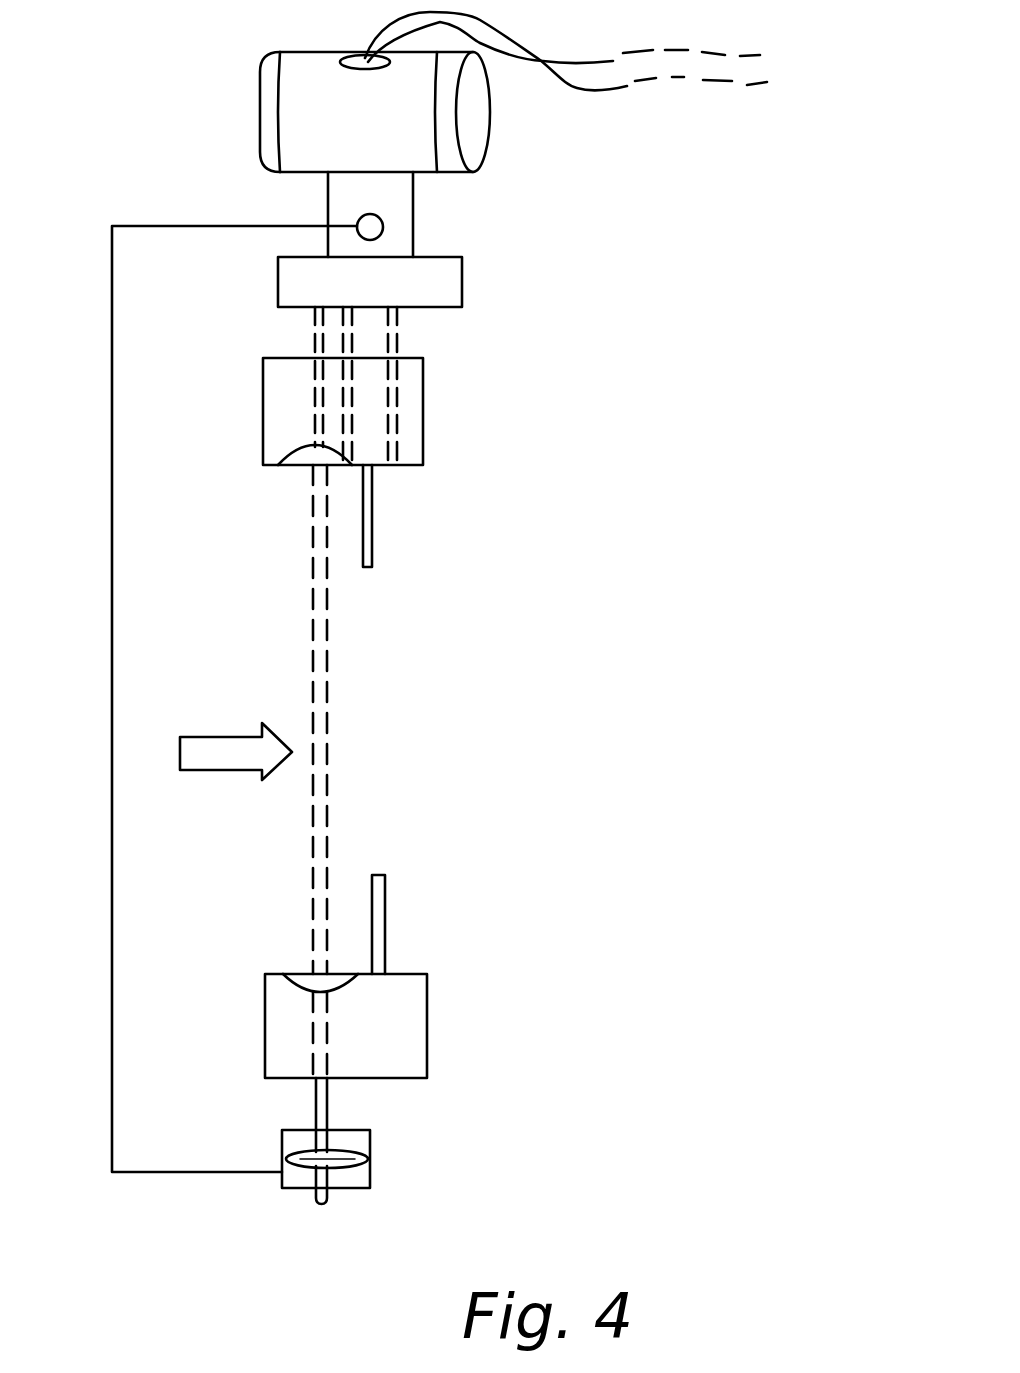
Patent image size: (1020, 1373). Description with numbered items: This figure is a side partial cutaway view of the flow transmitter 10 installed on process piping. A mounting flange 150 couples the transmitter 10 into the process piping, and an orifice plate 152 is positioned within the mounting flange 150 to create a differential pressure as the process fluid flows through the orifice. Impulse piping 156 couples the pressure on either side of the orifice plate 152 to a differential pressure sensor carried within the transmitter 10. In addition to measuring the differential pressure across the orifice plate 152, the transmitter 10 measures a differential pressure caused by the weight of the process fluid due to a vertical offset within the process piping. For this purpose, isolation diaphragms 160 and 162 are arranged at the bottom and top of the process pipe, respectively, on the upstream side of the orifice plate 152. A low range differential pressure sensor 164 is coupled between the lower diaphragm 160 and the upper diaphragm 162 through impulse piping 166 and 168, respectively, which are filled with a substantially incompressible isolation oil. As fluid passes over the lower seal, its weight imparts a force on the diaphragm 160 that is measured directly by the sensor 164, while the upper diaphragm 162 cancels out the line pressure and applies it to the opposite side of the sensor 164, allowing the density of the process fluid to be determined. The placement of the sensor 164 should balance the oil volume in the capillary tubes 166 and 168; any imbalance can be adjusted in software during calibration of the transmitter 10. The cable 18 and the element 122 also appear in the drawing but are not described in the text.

The flow transmitter 10 is at (317, 52).
The cable 18 is at (683, 78).
The flow cell 122 is at (420, 670).
The mounting flange 150 is at (427, 413).
The orifice plate 152 is at (375, 515).
The impulse piping 156 is at (353, 328).
The isolation diaphragm 160 is at (290, 968).
The isolation diaphragm 162 is at (300, 460).
The differential pressure sensor 164 is at (372, 1150).
The impulse piping 166 is at (327, 1098).
The impulse piping 168 is at (327, 838).